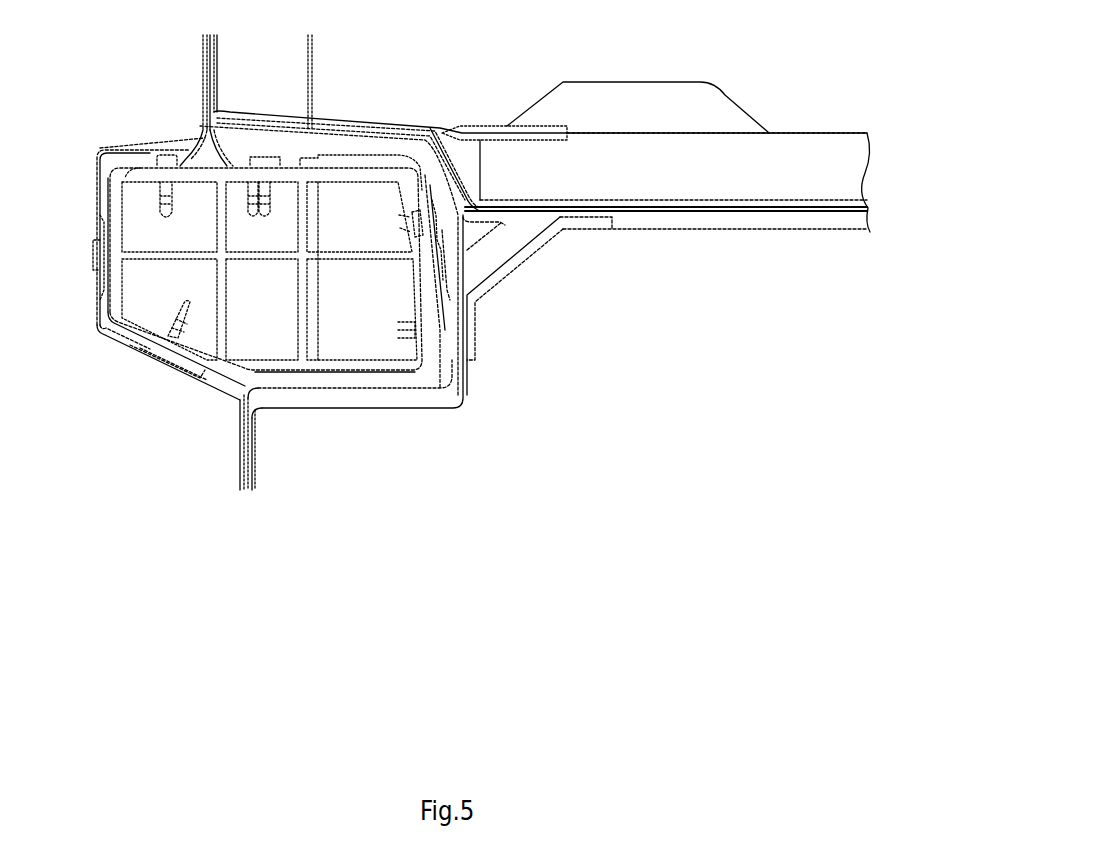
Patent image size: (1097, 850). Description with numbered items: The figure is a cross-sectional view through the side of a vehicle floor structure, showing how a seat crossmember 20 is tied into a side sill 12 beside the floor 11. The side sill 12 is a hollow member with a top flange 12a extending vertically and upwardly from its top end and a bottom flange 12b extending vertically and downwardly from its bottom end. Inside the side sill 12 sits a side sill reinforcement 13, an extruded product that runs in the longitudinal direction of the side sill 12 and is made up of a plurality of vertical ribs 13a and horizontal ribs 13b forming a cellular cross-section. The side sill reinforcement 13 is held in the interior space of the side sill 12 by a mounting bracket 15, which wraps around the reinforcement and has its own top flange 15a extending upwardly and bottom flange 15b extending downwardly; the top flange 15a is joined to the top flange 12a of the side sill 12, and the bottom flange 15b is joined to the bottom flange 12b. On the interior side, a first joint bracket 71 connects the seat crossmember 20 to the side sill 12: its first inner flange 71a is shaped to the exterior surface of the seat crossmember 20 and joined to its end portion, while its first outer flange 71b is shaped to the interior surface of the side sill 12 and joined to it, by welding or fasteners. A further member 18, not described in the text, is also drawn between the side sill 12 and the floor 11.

The floor 11 is at (725, 210).
The side sill 12 is at (337, 122).
The top flange of side sill 12a is at (218, 54).
The bottom flange of side sill 12b is at (253, 459).
The side sill reinforcement 13 is at (100, 320).
The vertical rib 13a is at (215, 336).
The horizontal rib 13b is at (150, 263).
The mounting bracket 15 is at (96, 180).
The top flange of mounting bracket 15a is at (207, 72).
The bottom flange of mounting bracket 15b is at (246, 462).
The cross member bracket 18 is at (517, 260).
The seat crossmember 20 is at (803, 157).
The first joint bracket 71 is at (475, 121).
The first inner flange 71a is at (545, 126).
The first outer flange 71b is at (395, 122).